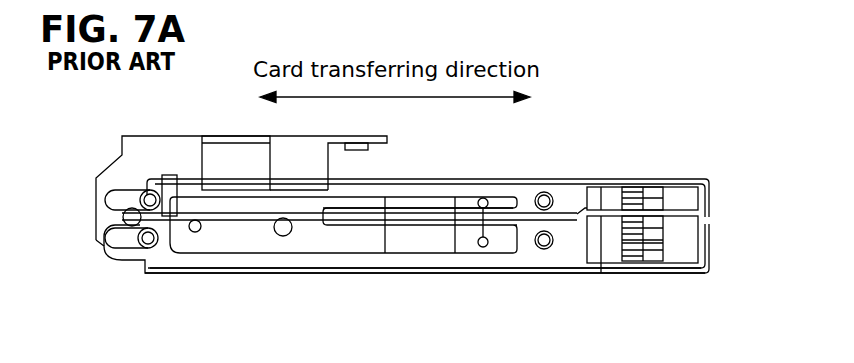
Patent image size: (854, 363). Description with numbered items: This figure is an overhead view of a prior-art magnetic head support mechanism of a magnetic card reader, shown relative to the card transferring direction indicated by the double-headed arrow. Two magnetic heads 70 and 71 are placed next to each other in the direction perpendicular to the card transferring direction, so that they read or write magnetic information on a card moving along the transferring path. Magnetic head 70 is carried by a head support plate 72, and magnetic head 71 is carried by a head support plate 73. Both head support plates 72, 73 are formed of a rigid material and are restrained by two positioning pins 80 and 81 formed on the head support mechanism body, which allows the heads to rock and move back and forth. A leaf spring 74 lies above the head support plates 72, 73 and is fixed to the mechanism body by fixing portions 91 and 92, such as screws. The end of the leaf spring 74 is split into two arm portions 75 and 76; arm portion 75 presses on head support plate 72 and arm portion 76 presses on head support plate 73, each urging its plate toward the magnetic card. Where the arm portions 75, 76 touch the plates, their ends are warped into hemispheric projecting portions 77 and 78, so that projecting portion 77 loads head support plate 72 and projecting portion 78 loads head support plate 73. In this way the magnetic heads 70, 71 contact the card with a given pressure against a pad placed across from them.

The magnetic head 70 is at (690, 238).
The magnetic head 71 is at (682, 193).
The head support plate 72 is at (422, 267).
The head support plate 73 is at (354, 178).
The leaf spring 74 is at (364, 243).
The arm portion 75 is at (425, 297).
The arm portion 76 is at (490, 198).
The projecting portion 77 is at (483, 247).
The projecting portion 78 is at (272, 185).
The positioning pin 80 is at (548, 193).
The positioning pin 81 is at (142, 188).
The fixing portion 91 is at (282, 240).
The fixing portion 92 is at (197, 233).